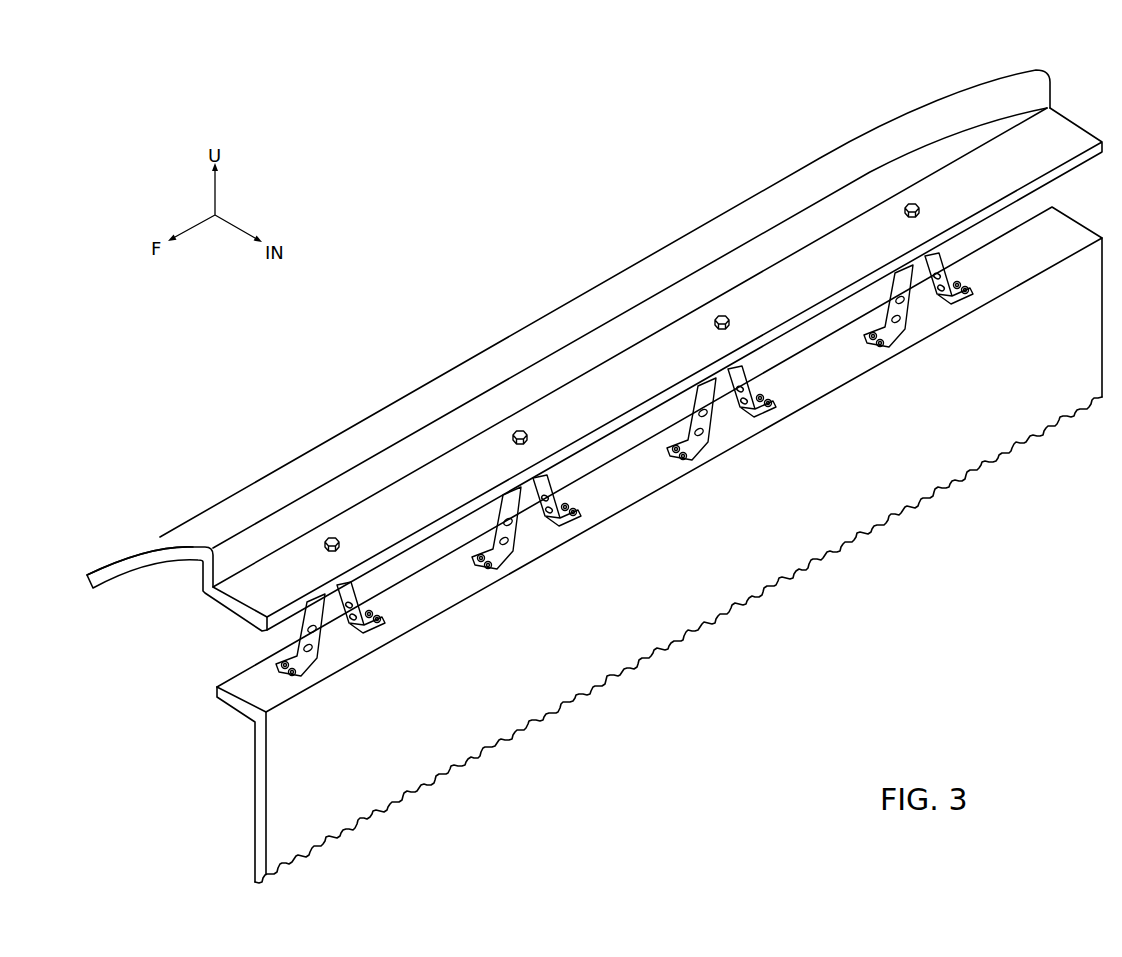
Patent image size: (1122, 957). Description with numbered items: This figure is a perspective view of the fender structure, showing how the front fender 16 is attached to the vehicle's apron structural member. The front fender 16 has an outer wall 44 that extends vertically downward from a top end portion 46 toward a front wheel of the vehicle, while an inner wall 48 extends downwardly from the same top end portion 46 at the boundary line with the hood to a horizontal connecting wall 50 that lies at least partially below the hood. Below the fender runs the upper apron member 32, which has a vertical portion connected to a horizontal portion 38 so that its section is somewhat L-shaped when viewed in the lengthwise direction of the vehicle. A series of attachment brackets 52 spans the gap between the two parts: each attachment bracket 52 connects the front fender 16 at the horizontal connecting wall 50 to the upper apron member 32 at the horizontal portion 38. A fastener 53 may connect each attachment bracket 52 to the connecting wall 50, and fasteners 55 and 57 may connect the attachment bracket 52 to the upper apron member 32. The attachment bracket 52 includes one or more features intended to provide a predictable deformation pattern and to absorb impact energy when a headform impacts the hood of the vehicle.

The front fender 16 is at (177, 547).
The outer wall 44 is at (123, 557).
The top end portion 46 is at (350, 447).
The inner wall 48 is at (403, 460).
The horizontal connecting wall 50 is at (622, 368).
The horizontal portion 38 is at (635, 468).
The upper apron member 32 is at (457, 614).
The attachment bracket 52 is at (610, 484).
The fastener 53 is at (614, 357).
The fastener 55 is at (261, 649).
The fastener 57 is at (321, 692).